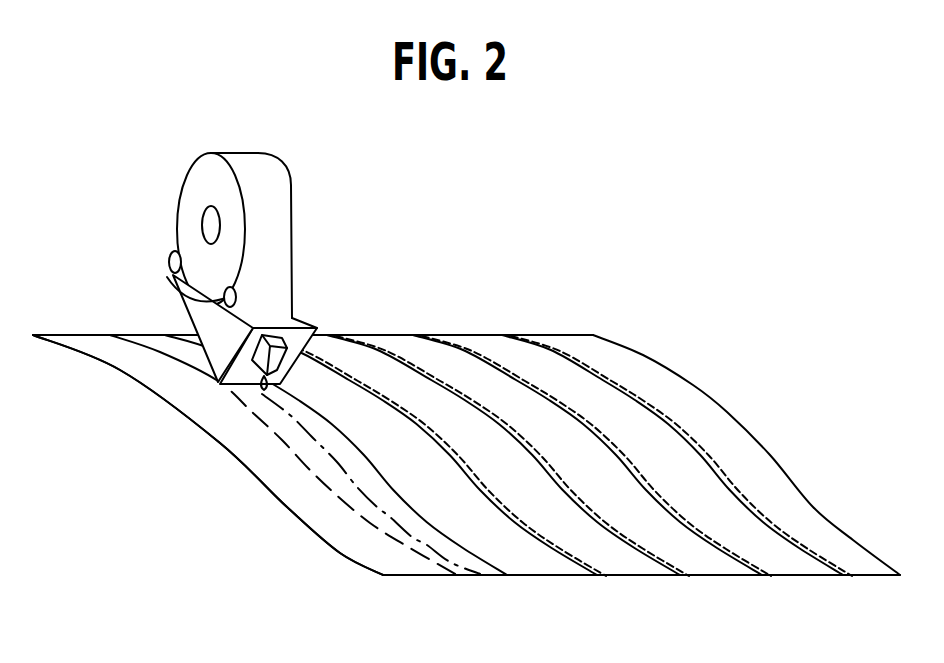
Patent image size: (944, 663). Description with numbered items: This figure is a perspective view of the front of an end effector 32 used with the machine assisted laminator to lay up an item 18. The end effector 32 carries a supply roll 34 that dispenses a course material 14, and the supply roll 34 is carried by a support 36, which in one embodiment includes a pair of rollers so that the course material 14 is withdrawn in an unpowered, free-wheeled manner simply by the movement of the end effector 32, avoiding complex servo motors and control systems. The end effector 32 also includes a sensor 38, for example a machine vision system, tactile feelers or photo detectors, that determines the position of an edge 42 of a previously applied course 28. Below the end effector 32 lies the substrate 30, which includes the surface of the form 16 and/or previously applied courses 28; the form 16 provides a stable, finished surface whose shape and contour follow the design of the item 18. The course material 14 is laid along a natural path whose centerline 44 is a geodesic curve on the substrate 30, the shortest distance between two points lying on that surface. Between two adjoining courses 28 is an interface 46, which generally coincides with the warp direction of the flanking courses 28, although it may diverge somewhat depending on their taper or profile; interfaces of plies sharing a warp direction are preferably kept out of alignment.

The course material 14 is at (278, 226).
The form 16 is at (277, 480).
The item 18 is at (786, 432).
The courses 28 is at (628, 567).
The substrate 30 is at (208, 455).
The end effector 32 is at (250, 243).
The supply roll 34 is at (204, 221).
The support 36 is at (223, 298).
The sensor 38 is at (283, 352).
The edge 42 is at (487, 563).
The centerline 44 is at (403, 540).
The interface 46 is at (853, 576).